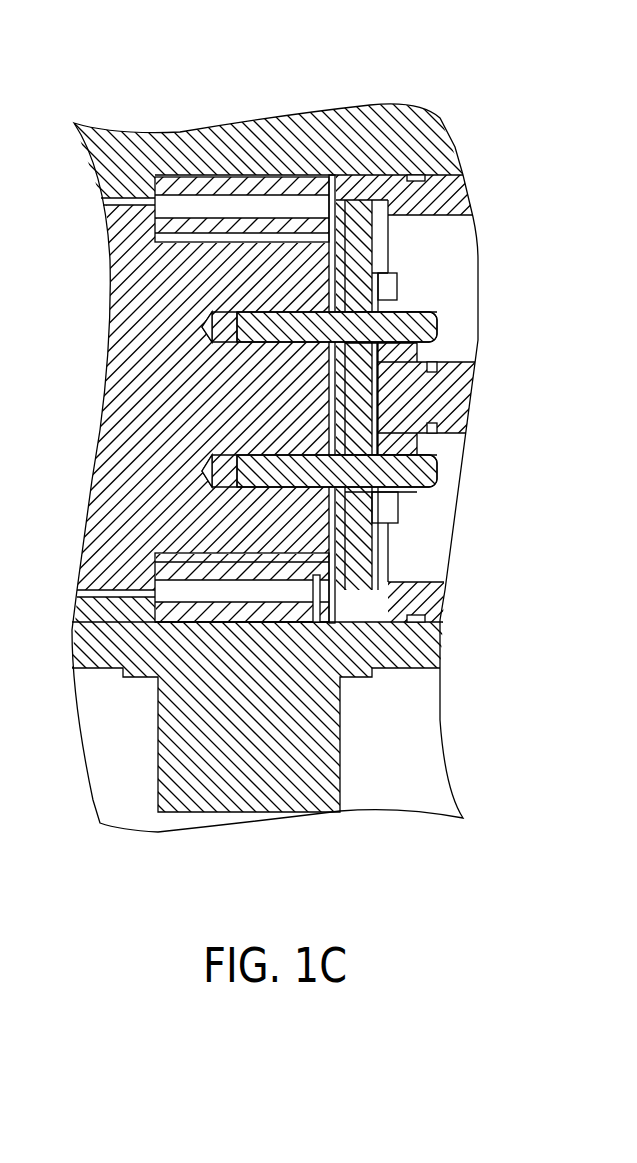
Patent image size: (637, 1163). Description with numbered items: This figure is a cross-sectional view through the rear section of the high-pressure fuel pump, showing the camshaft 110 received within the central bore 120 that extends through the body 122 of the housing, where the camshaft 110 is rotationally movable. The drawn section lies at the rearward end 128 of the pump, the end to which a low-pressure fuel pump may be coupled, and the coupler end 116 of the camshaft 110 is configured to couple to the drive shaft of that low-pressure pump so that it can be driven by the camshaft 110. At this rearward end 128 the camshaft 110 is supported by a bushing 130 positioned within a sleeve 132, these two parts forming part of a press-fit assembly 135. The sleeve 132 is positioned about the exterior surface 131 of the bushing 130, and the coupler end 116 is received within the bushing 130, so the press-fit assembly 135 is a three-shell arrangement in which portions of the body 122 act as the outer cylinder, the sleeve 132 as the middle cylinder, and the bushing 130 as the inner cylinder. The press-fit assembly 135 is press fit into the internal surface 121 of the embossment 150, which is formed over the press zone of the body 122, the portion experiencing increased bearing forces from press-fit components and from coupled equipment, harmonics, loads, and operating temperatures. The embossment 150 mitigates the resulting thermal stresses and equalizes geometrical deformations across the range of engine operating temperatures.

The camshaft 110 is at (310, 302).
The coupler end 116 is at (143, 180).
The central bore 120 is at (77, 595).
The internal surface 121 is at (257, 622).
The body 122 is at (377, 143).
The rearward end 128 is at (490, 74).
The bushing 130 is at (155, 556).
The exterior surface 131 is at (257, 235).
The sleeve 132 is at (318, 585).
The press-fit assembly 135 is at (257, 160).
The embossment 150 is at (318, 773).